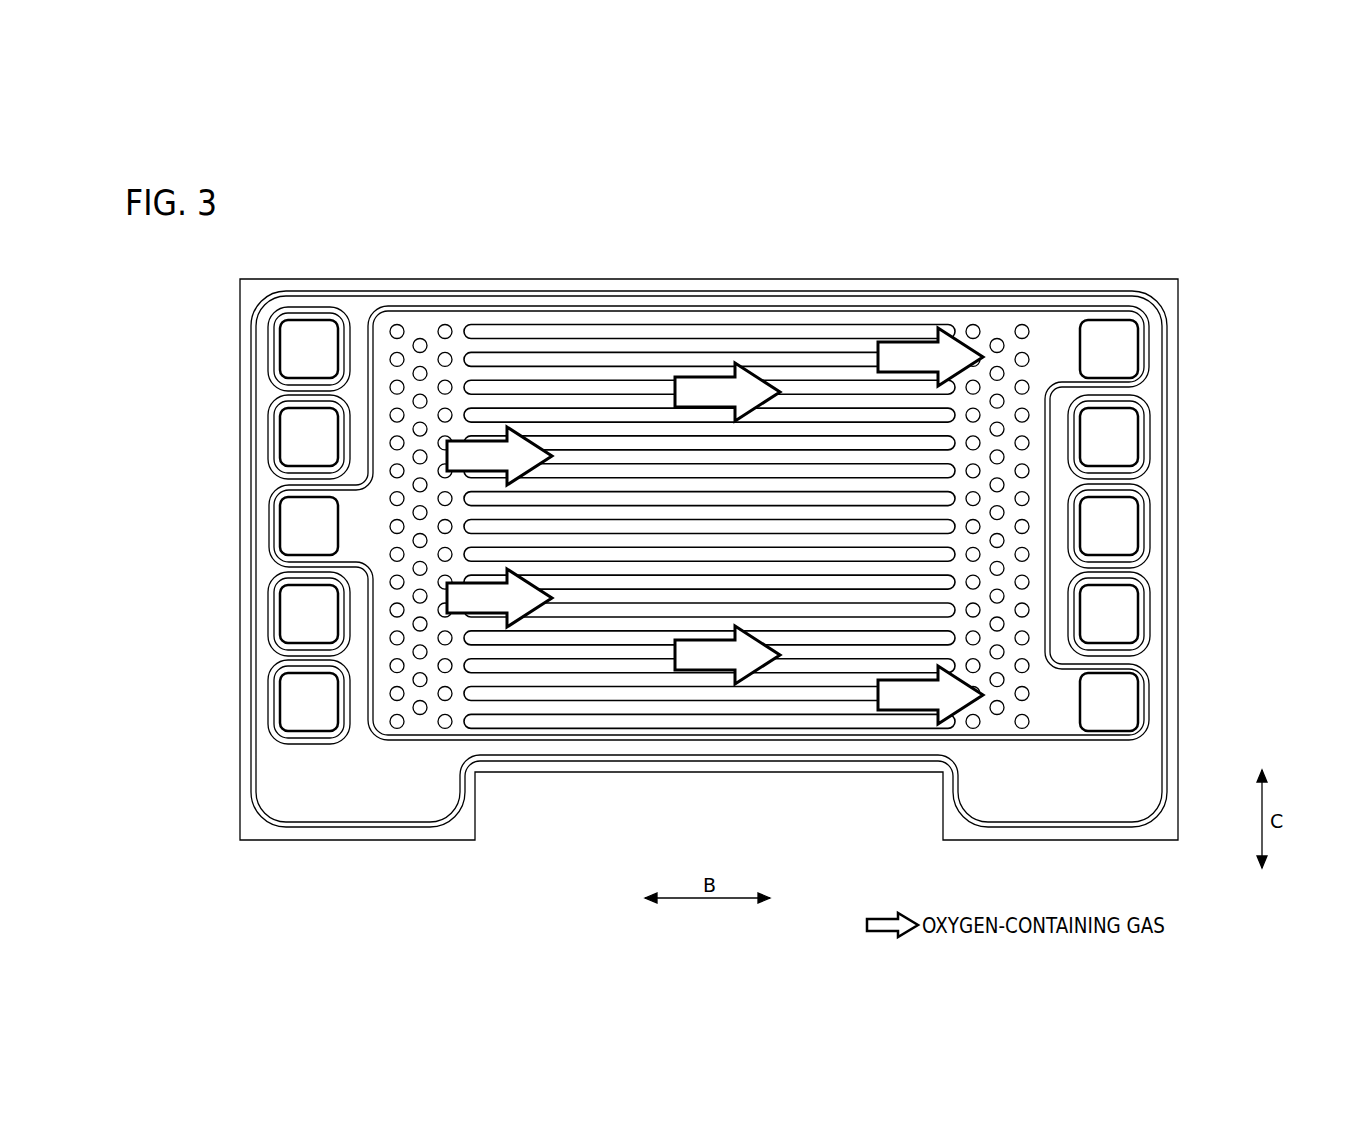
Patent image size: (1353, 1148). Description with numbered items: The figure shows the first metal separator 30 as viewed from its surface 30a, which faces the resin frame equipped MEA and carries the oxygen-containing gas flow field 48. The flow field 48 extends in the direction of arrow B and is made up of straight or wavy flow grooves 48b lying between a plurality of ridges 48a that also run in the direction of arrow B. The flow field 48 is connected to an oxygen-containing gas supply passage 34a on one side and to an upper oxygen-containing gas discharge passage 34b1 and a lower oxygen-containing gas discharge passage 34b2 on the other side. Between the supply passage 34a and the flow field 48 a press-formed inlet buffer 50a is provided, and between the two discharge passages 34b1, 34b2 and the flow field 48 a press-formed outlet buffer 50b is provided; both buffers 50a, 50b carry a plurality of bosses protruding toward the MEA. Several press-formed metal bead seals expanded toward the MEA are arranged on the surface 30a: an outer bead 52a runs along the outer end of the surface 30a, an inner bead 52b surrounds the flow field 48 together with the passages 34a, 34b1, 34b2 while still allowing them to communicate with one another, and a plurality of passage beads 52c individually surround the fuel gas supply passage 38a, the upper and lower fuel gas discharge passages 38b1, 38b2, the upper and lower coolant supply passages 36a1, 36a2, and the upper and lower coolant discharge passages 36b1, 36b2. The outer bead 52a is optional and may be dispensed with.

The first metal separator 30 is at (292, 237).
The surface 30a is at (960, 327).
The oxygen-containing gas supply passage 34a is at (292, 522).
The upper oxygen-containing gas discharge passage 34b1 is at (1125, 353).
The lower oxygen-containing gas discharge passage 34b2 is at (1125, 707).
The upper coolant supply passage 36a1 is at (1125, 442).
The lower coolant supply passage 36a2 is at (1125, 622).
The upper coolant discharge passage 36b1 is at (292, 441).
The lower coolant discharge passage 36b2 is at (292, 622).
The fuel gas supply passage 38a is at (1125, 520).
The upper fuel gas discharge passage 38b1 is at (292, 353).
The lower fuel gas discharge passage 38b2 is at (292, 710).
The oxygen-containing gas flow field 48 is at (709, 467).
The ridges 48a is at (600, 357).
The flow grooves 48b is at (655, 372).
The inlet buffer 50a is at (420, 345).
The outlet buffer 50b is at (997, 345).
The outer bead 52a is at (801, 757).
The inner bead 52b is at (545, 741).
The passage beads 52c is at (268, 333).